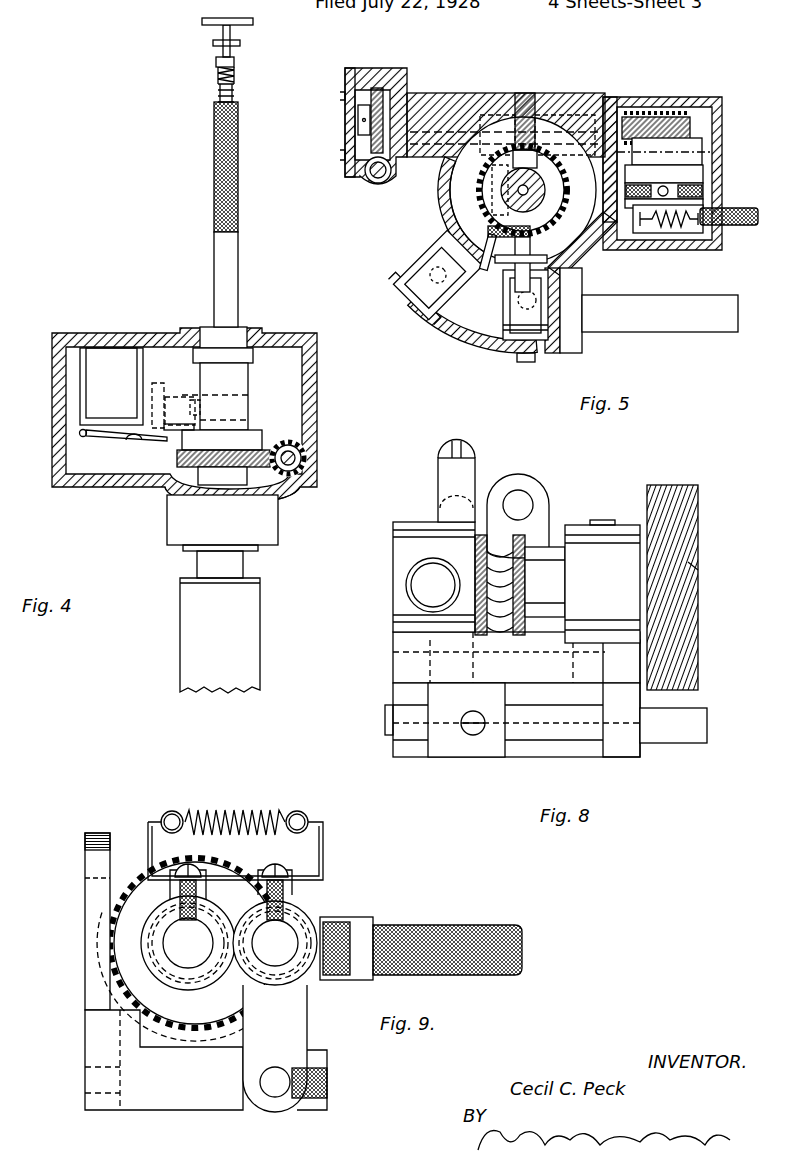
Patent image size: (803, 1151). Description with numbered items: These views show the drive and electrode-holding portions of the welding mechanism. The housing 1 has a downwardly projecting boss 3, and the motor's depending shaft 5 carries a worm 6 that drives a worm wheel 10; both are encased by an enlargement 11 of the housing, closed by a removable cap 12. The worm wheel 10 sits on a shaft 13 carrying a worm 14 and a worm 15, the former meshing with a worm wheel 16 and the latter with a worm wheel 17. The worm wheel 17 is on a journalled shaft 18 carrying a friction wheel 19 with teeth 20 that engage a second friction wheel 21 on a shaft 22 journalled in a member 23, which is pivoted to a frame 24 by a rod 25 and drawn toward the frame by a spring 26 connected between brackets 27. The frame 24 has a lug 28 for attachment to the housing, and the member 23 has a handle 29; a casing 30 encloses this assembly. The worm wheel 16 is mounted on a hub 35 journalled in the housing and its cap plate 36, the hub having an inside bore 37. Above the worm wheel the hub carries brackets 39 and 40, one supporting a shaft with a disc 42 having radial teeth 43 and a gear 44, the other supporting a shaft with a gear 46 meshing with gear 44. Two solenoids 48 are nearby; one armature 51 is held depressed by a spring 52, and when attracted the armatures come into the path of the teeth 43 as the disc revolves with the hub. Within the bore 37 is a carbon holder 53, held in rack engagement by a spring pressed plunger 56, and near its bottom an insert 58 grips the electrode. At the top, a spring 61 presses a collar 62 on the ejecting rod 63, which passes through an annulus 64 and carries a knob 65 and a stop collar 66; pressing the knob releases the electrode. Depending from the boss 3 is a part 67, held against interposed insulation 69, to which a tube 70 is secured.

In FIG. 4, the housing 1 is at (318, 392).
In FIG. 5, the housing 1 is at (440, 205).
In FIG. 4, the boss 3 is at (272, 515).
In FIG. 5, the shaft 5 is at (368, 182).
In FIG. 5, the worm 6 is at (378, 180).
In FIG. 5, the worm wheel 10 is at (371, 98).
In FIG. 5, the enlargement 11 is at (407, 78).
In FIG. 5, the removable cap 12 is at (345, 128).
In FIG. 4, the shaft 13 is at (300, 462).
In FIG. 5, the shaft 13 is at (467, 108).
In FIG. 4, the worm 14 is at (272, 452).
In FIG. 5, the worm 14 is at (530, 108).
In FIG. 5, the worm 15 is at (685, 110).
In FIG. 4, the worm wheel 16 is at (168, 490).
In FIG. 5, the worm wheel 16 is at (582, 252).
In FIG. 5, the worm wheel 17 is at (692, 128).
In FIG. 8, the worm wheel 17 is at (698, 512).
In FIG. 9, the worm wheel 17 is at (140, 862).
In FIG. 5, the shaft 18 is at (660, 233).
In FIG. 8, the shaft 18 is at (700, 568).
In FIG. 9, the shaft 18 is at (188, 943).
In FIG. 5, the friction wheel 19 is at (703, 172).
In FIG. 9, the friction wheel 19 is at (182, 975).
In FIG. 5, the teeth 20 is at (703, 203).
In FIG. 9, the teeth 20 is at (193, 983).
In FIG. 5, the second friction wheel 21 is at (703, 190).
In FIG. 8, the second friction wheel 21 is at (525, 540).
In FIG. 9, the second friction wheel 21 is at (300, 915).
In FIG. 8, the shaft 22 is at (400, 555).
In FIG. 9, the shaft 22 is at (275, 943).
In FIG. 5, the member 23 is at (702, 152).
In FIG. 8, the member 23 is at (393, 674).
In FIG. 9, the member 23 is at (308, 1018).
In FIG. 5, the frame 24 is at (620, 150).
In FIG. 8, the frame 24 is at (465, 757).
In FIG. 9, the frame 24 is at (170, 1110).
In FIG. 8, the rod 25 is at (695, 735).
In FIG. 9, the rod 25 is at (275, 1097).
In FIG. 8, the spring 26 is at (477, 450).
In FIG. 9, the spring 26 is at (232, 808).
In FIG. 8, the brackets 27 is at (470, 483).
In FIG. 9, the brackets 27 is at (156, 820).
In FIG. 5, the lug 28 is at (603, 212).
In FIG. 8, the lug 28 is at (538, 487).
In FIG. 9, the lug 28 is at (85, 855).
In FIG. 5, the handle 29 is at (745, 228).
In FIG. 8, the handle 29 is at (410, 585).
In FIG. 9, the handle 29 is at (522, 950).
In FIG. 5, the casing 30 is at (722, 102).
In FIG. 4, the hub 35 is at (240, 393).
In FIG. 5, the hub 35 is at (528, 190).
In FIG. 4, the cap plate 36 is at (290, 338).
In FIG. 5, the bore 37 is at (543, 176).
In FIG. 4, the bracket 39 is at (172, 432).
In FIG. 5, the bracket 40 is at (500, 180).
In FIG. 4, the disc 42 is at (170, 397).
In FIG. 4, the teeth 43 is at (158, 383).
In FIG. 4, the gear 44 is at (196, 400).
In FIG. 5, the gear 44 is at (532, 247).
In FIG. 5, the gear 46 is at (488, 230).
In FIG. 4, the solenoids 48 is at (118, 352).
In FIG. 5, the solenoids 48 is at (430, 280).
In FIG. 4, the armature 51 is at (138, 443).
In FIG. 5, the armature 51 is at (482, 240).
In FIG. 4, the spring 52 is at (112, 440).
In FIG. 4, the carbon holder 53 is at (232, 265).
In FIG. 5, the spring pressed plunger 56 is at (538, 160).
In FIG. 5, the insert 58 is at (492, 175).
In FIG. 4, the spring 61 is at (218, 88).
In FIG. 4, the collar 62 is at (236, 76).
In FIG. 4, the ejecting rod 63 is at (222, 30).
In FIG. 4, the annulus 64 is at (236, 62).
In FIG. 4, the knob 65 is at (202, 21).
In FIG. 4, the stop collar 66 is at (240, 42).
In FIG. 4, the part 67 is at (240, 565).
In FIG. 4, the insulation 69 is at (185, 550).
In FIG. 4, the tube 70 is at (252, 613).